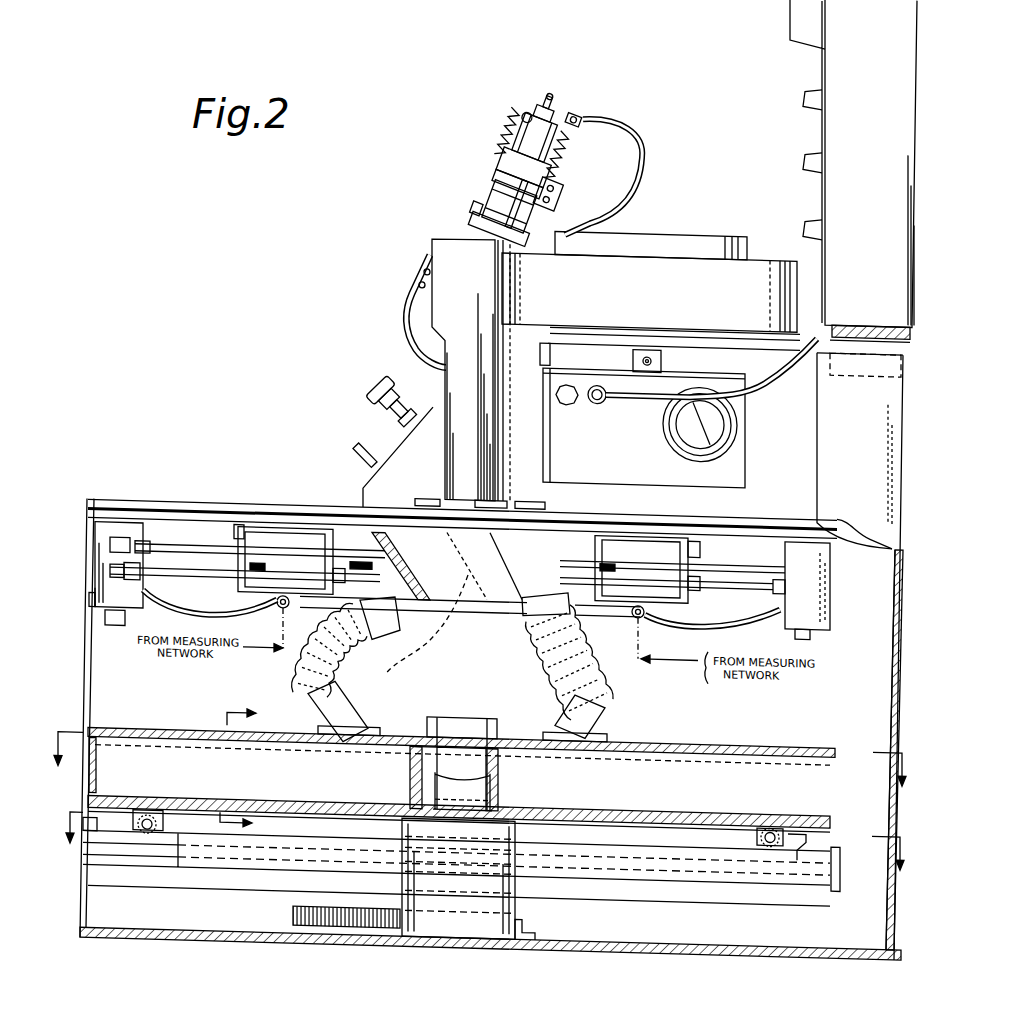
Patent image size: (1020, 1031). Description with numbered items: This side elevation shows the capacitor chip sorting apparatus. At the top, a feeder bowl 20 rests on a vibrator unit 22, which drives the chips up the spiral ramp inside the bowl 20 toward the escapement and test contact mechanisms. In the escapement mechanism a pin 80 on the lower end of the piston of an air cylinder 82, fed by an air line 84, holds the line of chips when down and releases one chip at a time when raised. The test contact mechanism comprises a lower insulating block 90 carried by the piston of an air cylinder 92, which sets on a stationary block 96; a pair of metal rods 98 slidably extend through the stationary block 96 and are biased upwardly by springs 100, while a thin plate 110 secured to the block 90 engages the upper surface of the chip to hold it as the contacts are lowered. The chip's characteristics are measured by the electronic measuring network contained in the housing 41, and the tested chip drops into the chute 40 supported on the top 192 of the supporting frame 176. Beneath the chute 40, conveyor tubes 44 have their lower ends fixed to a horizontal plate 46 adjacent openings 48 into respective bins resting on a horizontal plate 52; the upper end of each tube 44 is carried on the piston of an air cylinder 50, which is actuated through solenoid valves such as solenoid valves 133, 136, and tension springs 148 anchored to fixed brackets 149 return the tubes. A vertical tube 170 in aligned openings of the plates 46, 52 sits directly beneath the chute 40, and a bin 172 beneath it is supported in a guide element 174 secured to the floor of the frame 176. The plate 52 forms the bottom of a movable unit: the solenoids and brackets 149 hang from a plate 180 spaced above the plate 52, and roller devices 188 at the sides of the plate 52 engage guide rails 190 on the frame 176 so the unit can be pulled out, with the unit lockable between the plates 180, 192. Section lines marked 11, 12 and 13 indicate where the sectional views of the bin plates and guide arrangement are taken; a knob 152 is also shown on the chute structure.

The section line 11- 11 is at (466, 764).
The section line 12- 12 is at (469, 841).
The section line 13- 13 is at (248, 767).
The feeder bowl 20 is at (655, 280).
The vibrator unit 22 is at (624, 451).
The chute 40 is at (475, 292).
The housing 41 is at (892, 85).
The conveyor tube 44 is at (370, 664).
The horizontal plate 46 is at (672, 724).
The opening 48 is at (332, 736).
The air cylinder 50 is at (172, 540).
The horizontal plate 52 is at (688, 793).
The pin 80 is at (566, 216).
The air cylinder 82 is at (520, 122).
The air line 84 is at (643, 128).
The lower insulating block 90 is at (503, 188).
The air cylinder 92 is at (527, 156).
The stationary block 96 is at (513, 162).
The metal rods 98 is at (556, 94).
The springs 100 is at (532, 106).
The thin plate 110 is at (478, 210).
The solenoid valve 133 is at (90, 597).
The solenoid valve 136 is at (830, 592).
The tension springs 148 is at (262, 545).
The fixed brackets 149 is at (238, 520).
The hand knob 152 is at (378, 391).
The vertical tube 170 is at (498, 750).
The bin 172 is at (450, 926).
The guide element 174 is at (528, 912).
The supporting frame 176 is at (180, 936).
The plate 180 is at (95, 534).
The roller devices 188 is at (165, 806).
The guide rails 190 is at (92, 852).
The top 192 is at (118, 496).